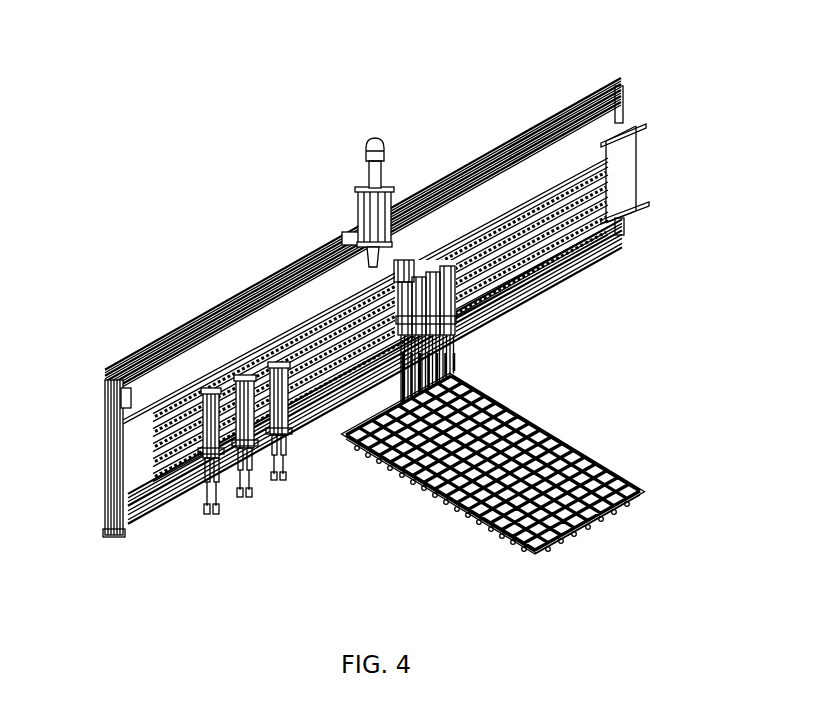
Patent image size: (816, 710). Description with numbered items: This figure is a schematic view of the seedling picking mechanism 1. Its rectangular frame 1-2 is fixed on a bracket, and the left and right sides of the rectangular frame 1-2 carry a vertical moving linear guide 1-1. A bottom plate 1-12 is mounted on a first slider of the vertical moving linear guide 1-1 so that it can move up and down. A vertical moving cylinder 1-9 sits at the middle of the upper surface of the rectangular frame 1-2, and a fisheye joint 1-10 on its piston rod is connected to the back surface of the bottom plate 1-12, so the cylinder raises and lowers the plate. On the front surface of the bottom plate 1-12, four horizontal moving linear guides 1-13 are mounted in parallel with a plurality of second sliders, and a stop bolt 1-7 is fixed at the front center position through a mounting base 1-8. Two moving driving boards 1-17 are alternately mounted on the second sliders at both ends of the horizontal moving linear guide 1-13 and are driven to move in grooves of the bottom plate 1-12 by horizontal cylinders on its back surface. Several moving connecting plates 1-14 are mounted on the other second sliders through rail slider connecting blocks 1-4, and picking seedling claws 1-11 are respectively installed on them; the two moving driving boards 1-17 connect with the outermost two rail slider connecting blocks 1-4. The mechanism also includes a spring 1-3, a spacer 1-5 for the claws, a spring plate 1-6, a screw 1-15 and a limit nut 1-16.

The seedling picking mechanism 1 is at (295, 270).
The vertical moving linear guide 1-1 is at (108, 368).
The rectangular frame 1-2 is at (156, 348).
The spring 1-3 is at (235, 378).
The rail slider connecting block 1-4 is at (240, 372).
The spacer for picking seedling claws 1-5 is at (252, 378).
The spring plate 1-6 is at (342, 230).
The stop bolt 1-7 is at (352, 220).
The mounting base for stop bolt 1-8 is at (357, 208).
The vertical moving cylinder 1-9 is at (373, 188).
The fisheye joint for vertical moving cylinder 1-10 is at (368, 240).
The picking seedling claw 1-11 is at (463, 233).
The bottom plate 1-12 is at (617, 155).
The horizontal moving linear guide 1-13 is at (625, 177).
The moving connecting plate for picking seedling claws 1-14 is at (214, 476).
The screw 1-15 is at (207, 508).
The limit nut 1-16 is at (201, 502).
The moving driving board for picking seedling claws 1-17 is at (115, 524).